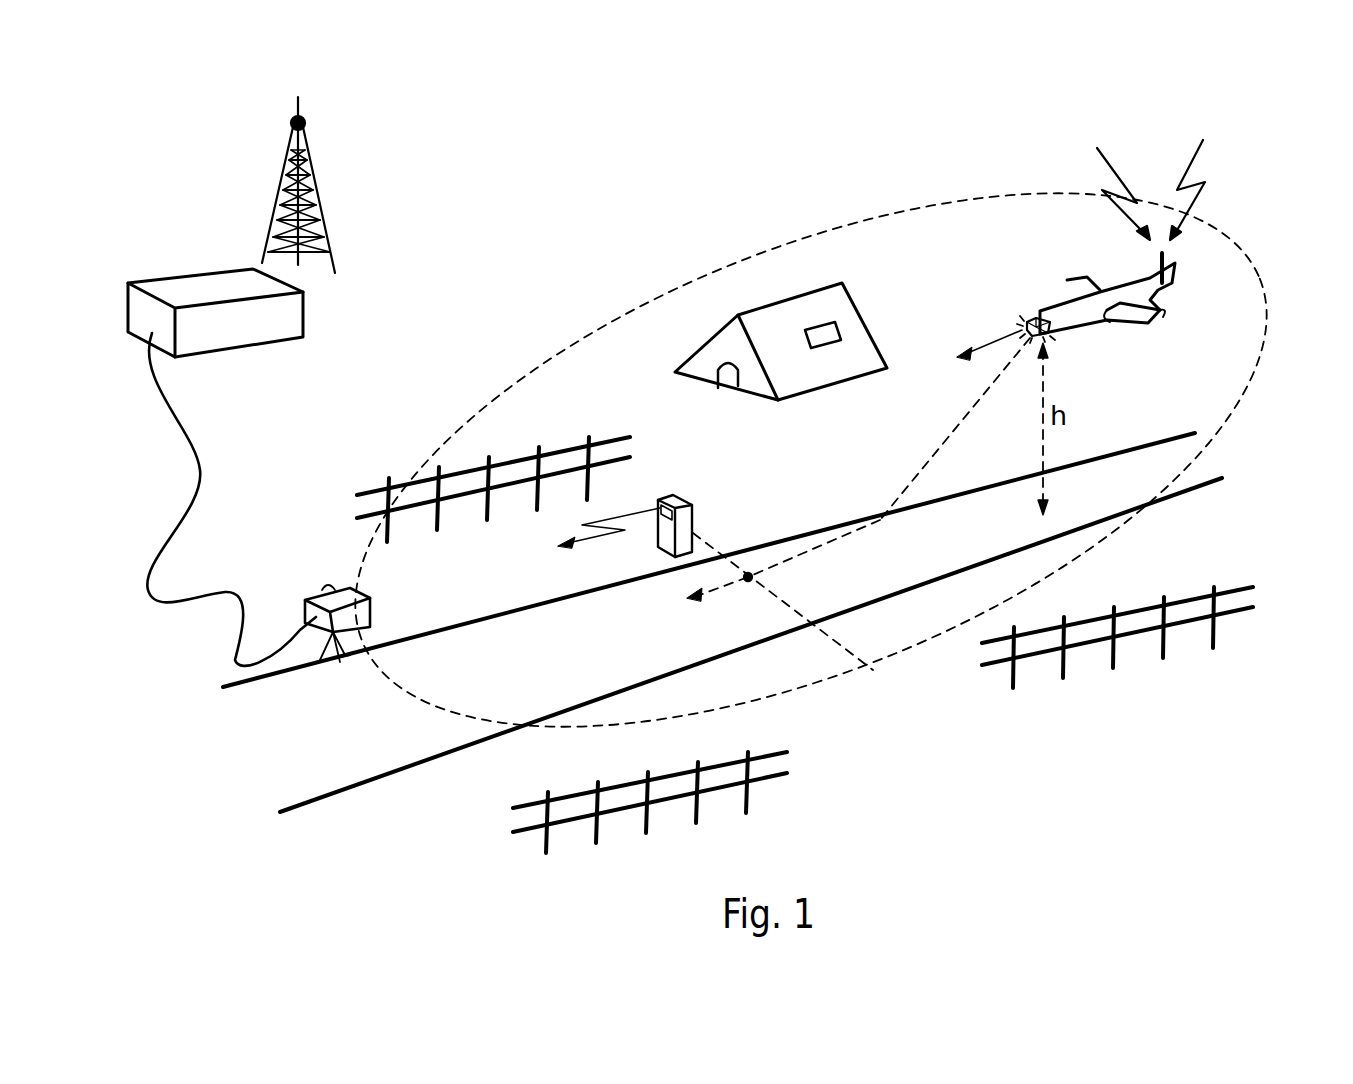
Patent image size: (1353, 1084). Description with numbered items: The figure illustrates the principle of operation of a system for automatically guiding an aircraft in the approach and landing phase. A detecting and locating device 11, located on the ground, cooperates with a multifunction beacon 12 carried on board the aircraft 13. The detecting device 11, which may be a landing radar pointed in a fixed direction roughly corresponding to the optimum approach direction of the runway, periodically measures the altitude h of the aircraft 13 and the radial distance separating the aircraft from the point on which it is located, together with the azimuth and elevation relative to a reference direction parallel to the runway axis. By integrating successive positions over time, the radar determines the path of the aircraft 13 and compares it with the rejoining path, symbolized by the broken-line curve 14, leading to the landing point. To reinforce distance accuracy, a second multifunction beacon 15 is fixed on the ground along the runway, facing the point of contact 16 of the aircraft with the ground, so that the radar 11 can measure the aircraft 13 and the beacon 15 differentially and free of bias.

The detecting and locating device 11 is at (362, 605).
The multifunction beacon 12 is at (1036, 318).
The aircraft 13 is at (1100, 326).
The rejoining path 14 is at (958, 445).
The second multifunction beacon 15 is at (683, 497).
The point of contact 16 is at (748, 582).